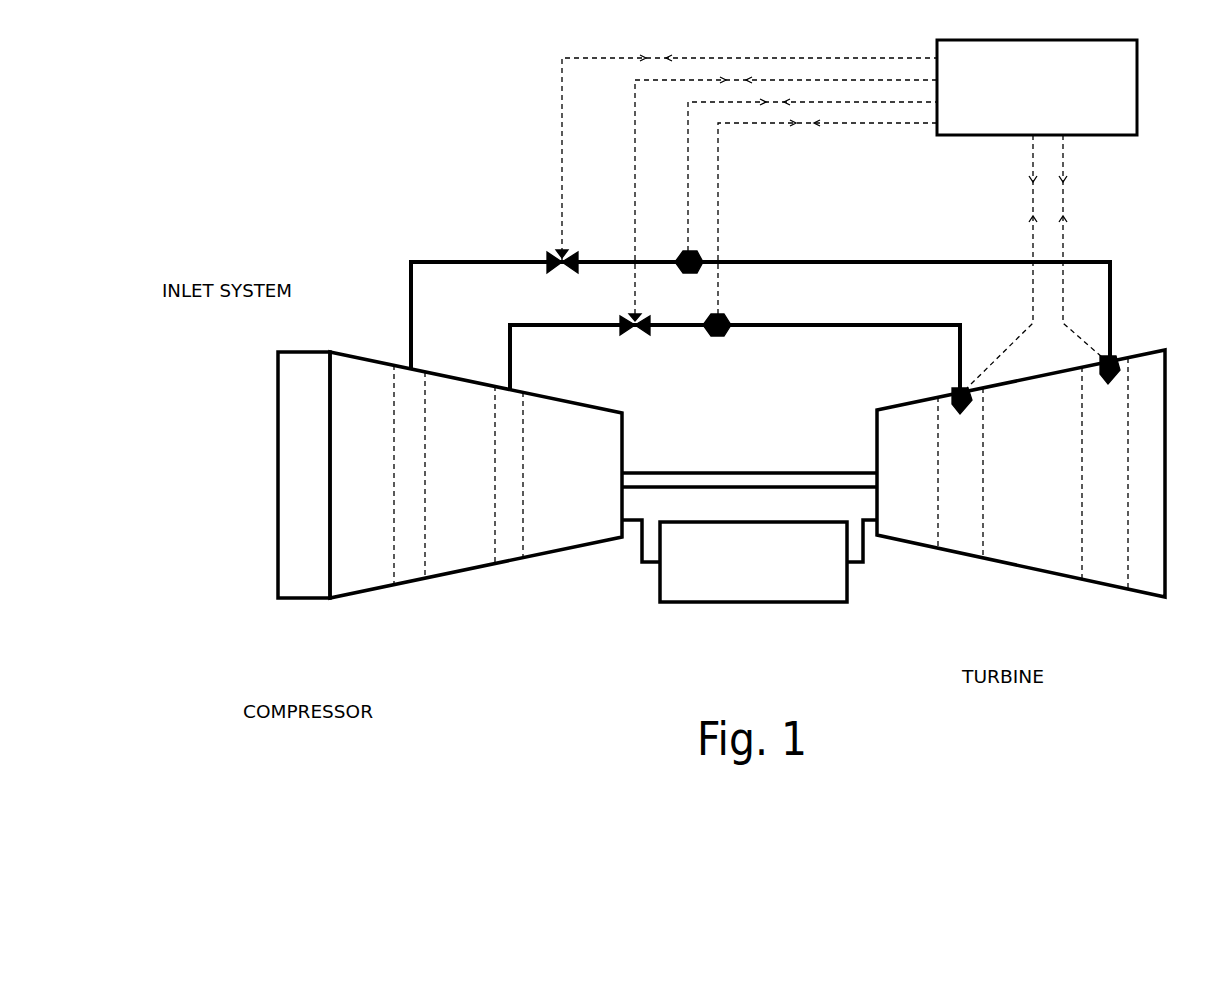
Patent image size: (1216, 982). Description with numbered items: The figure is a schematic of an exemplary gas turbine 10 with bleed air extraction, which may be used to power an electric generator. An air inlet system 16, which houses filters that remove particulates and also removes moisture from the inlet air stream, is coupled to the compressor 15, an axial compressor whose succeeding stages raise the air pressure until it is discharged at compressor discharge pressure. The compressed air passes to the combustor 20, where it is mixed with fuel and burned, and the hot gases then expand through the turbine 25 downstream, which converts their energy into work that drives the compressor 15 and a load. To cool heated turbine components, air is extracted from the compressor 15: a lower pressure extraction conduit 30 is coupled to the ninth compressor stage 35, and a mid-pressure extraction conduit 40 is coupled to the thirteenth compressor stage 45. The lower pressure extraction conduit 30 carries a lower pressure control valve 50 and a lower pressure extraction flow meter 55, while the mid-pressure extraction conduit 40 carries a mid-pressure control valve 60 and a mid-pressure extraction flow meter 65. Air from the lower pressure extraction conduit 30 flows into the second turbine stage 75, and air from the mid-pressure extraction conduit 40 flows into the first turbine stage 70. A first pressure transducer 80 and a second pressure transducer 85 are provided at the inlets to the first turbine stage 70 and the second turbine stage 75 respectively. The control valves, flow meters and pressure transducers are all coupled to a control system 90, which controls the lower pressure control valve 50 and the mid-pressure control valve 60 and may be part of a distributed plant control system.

The gas turbine 10 is at (524, 140).
The compressor 15 is at (412, 580).
The air inlet system 16 is at (303, 350).
The combustor 20 is at (735, 603).
The turbine 25 is at (1060, 578).
The lower pressure extraction conduit 30 is at (407, 275).
The 9th compressor stage 35 is at (409, 475).
The mid-pressure extraction conduit 40 is at (508, 335).
The 13th compressor stage 45 is at (509, 475).
The lower pressure control valve 50 is at (562, 252).
The lower pressure extraction flow meter 55 is at (700, 252).
The mid-pressure control valve 60 is at (636, 338).
The mid-pressure extraction flow meter 65 is at (722, 336).
The first turbine stage 70 is at (960, 473).
The second turbine stage 75 is at (1105, 473).
The first pressure transducer 80 is at (970, 410).
The second pressure transducer 85 is at (1118, 382).
The control system 90 is at (1137, 85).